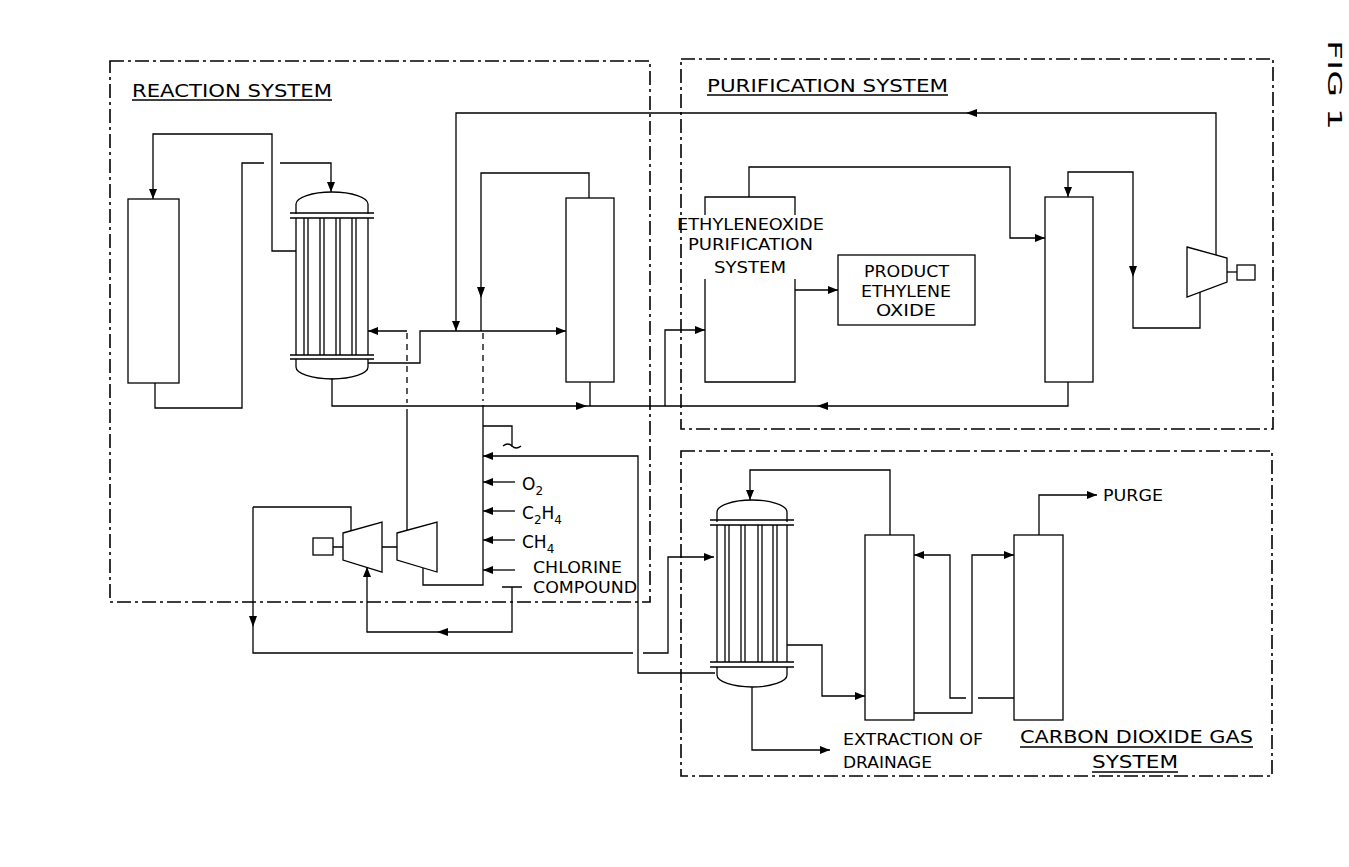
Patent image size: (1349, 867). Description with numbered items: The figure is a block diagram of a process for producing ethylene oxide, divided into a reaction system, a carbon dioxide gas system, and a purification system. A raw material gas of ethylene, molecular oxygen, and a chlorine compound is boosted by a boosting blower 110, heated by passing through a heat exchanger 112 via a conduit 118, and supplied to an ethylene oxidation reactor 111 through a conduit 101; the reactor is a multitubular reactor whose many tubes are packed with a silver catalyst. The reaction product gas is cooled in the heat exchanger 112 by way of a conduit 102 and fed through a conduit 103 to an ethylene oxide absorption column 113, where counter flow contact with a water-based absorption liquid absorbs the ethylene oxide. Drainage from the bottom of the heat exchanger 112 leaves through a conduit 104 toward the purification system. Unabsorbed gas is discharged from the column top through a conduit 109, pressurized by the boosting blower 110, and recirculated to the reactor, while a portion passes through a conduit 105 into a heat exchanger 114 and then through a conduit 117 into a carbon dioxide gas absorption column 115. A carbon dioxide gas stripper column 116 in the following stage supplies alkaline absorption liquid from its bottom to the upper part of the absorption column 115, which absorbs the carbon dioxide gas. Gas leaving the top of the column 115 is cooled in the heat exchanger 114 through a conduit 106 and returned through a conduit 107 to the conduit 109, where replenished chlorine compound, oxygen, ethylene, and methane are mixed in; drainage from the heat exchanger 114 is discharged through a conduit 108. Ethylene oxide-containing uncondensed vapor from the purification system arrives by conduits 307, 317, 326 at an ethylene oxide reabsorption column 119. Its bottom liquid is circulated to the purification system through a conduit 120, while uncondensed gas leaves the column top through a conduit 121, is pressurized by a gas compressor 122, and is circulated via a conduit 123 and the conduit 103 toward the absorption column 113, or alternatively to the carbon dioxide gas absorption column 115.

The conduit 101 is at (197, 134).
The conduit 102 is at (198, 408).
The conduit 103 is at (447, 331).
The conduit 104 is at (447, 407).
The conduit 105 is at (290, 653).
The conduit 106 is at (825, 470).
The conduit 107 is at (652, 673).
The conduit 108 is at (752, 722).
The conduit 109 is at (481, 230).
The boosting blower 110 is at (366, 530).
The ethylene oxidation reactor 111 is at (179, 295).
The heat exchanger 112 is at (368, 238).
The ethylene oxide absorption column 113 is at (605, 197).
The heat exchanger 114 is at (787, 577).
The carbon dioxide gas absorption column 115 is at (906, 534).
The carbon dioxide gas stripper column 116 is at (1063, 648).
The conduit 117 is at (808, 645).
The conduit 118 is at (407, 437).
The ethylene oxide reabsorption column 119 is at (1093, 363).
The conduit 120 is at (887, 403).
The conduit 121 is at (1133, 188).
The gas compressor 122 is at (1213, 282).
The conduit 123 is at (1035, 115).
The conduit 307 is at (897, 202).
The conduit 317 is at (897, 202).
The conduit 326 is at (915, 175).